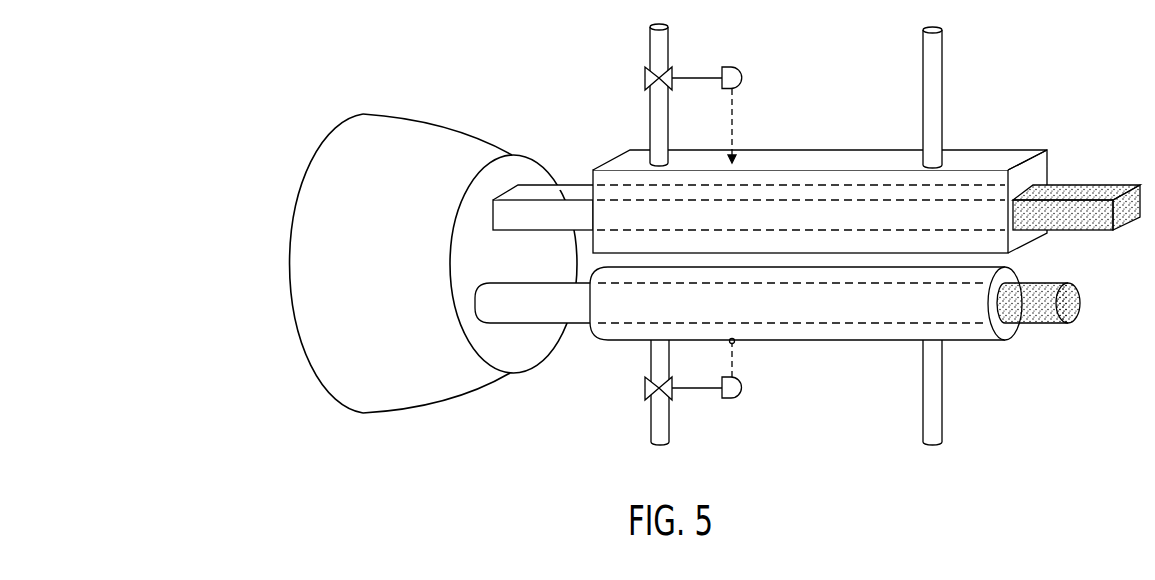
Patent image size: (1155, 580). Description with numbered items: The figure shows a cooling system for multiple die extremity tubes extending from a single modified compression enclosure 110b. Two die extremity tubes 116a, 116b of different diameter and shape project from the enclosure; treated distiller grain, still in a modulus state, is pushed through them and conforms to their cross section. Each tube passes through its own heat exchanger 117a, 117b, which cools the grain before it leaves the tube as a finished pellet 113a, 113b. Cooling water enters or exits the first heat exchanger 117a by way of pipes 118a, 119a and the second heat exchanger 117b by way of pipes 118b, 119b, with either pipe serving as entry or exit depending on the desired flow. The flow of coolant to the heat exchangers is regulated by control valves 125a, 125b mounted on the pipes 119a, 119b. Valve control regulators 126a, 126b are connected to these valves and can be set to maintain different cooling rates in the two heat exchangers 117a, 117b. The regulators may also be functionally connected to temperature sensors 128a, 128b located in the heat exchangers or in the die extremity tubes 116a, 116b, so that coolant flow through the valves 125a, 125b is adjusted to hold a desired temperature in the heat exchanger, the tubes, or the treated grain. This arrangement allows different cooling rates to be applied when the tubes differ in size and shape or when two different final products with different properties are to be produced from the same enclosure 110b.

The modified compression enclosure 110b is at (327, 395).
The pellet 113a is at (1081, 186).
The pellet 113b is at (1046, 325).
The die extremity tube 116a is at (582, 184).
The die extremity tube 116b is at (578, 327).
The heat exchanger 117a is at (829, 150).
The heat exchanger 117b is at (964, 344).
The pipe 118a is at (943, 72).
The pipe 118b is at (943, 428).
The pipe 119a is at (669, 40).
The pipe 119b is at (670, 437).
The control valve 125a is at (645, 76).
The control valve 125b is at (645, 386).
The valve control regulator 126a is at (731, 66).
The valve control regulator 126b is at (729, 401).
The temperature sensor 128a is at (740, 153).
The temperature sensor 128b is at (737, 346).